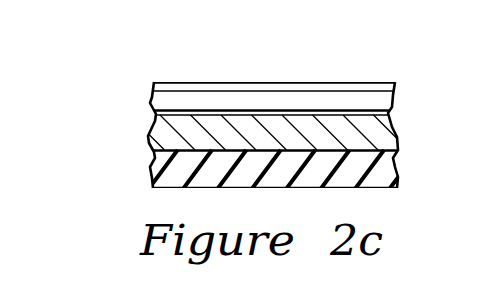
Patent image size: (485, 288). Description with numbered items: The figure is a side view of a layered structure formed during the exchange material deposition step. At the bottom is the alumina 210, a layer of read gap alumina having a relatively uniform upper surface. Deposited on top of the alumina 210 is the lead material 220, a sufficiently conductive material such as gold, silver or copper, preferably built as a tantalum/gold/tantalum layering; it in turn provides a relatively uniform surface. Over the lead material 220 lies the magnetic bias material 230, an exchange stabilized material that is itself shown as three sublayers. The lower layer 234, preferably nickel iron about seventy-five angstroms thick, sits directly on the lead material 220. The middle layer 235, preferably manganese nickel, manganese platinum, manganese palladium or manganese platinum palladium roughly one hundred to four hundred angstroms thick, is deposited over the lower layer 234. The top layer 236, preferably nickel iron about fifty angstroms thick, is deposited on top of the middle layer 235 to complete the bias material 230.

The alumina 210 is at (163, 177).
The lead material 220 is at (140, 130).
The magnetic bias material 230 is at (206, 68).
The lower layer 234 is at (236, 100).
The middle layer 235 is at (300, 103).
The top layer 236 is at (354, 84).